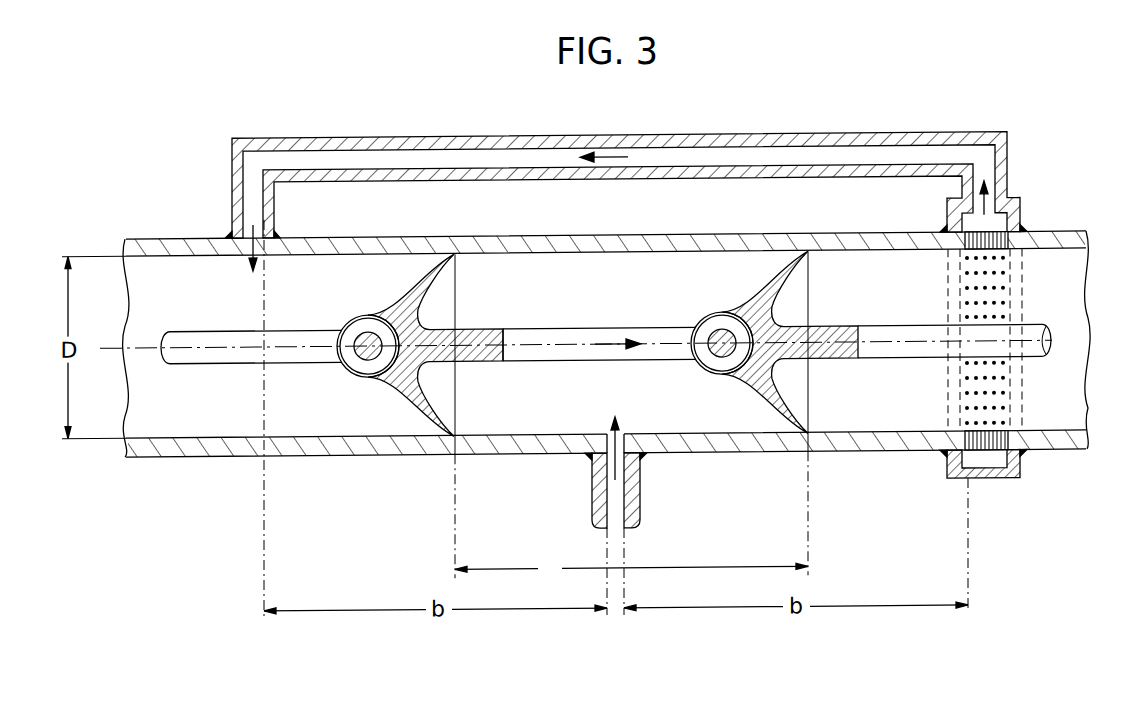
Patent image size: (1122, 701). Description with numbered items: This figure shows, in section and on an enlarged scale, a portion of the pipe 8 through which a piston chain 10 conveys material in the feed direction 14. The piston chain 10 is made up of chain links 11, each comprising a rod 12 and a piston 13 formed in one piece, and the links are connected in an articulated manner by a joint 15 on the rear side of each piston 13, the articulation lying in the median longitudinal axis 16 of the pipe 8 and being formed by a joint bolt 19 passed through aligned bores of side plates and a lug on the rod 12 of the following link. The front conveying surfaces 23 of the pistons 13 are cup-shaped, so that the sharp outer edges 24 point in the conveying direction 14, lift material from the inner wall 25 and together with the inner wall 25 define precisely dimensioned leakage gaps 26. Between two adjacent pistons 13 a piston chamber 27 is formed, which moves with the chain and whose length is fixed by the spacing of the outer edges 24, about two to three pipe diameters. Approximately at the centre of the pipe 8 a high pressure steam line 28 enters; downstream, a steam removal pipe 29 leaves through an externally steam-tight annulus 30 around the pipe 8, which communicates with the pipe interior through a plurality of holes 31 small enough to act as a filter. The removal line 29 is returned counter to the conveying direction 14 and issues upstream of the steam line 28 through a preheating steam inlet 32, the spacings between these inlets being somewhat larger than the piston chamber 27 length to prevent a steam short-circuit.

The pipe 8 is at (175, 242).
The piston chain 10 is at (627, 318).
The chain link 11 is at (186, 329).
The rod 12 is at (526, 334).
The piston 13 is at (403, 403).
The feed direction 14 is at (599, 349).
The joint 15 is at (352, 319).
The median longitudinal axis 16 is at (893, 330).
The joint bolt 19 is at (716, 338).
The conveying surface 23 is at (783, 306).
The outer edge 24 is at (809, 255).
The inner wall 25 is at (295, 433).
The leakage gap 26 is at (456, 264).
The piston chamber 27 is at (643, 404).
The high pressure steam line 28 is at (631, 486).
The steam removal pipe 29 is at (604, 135).
The annulus 30 is at (1000, 482).
The holes 31 is at (972, 221).
The preheating steam inlet 32 is at (263, 221).